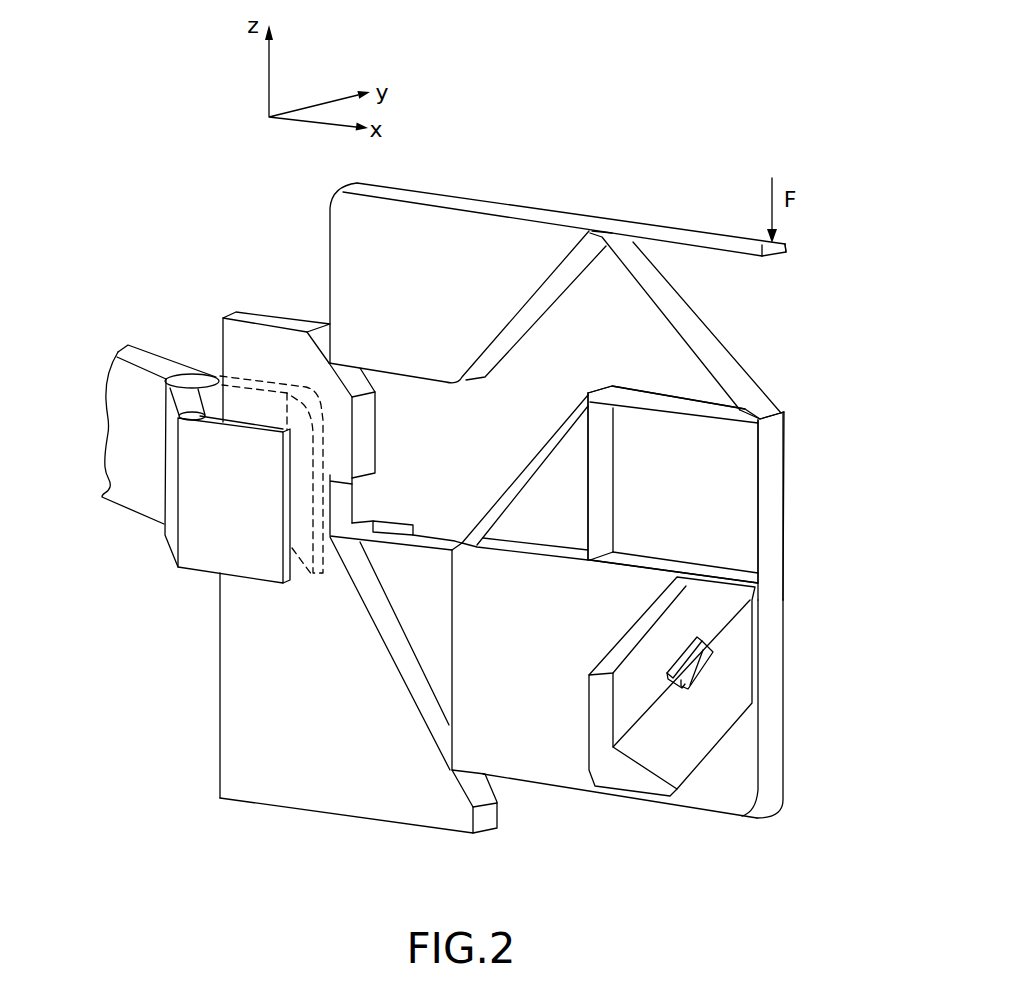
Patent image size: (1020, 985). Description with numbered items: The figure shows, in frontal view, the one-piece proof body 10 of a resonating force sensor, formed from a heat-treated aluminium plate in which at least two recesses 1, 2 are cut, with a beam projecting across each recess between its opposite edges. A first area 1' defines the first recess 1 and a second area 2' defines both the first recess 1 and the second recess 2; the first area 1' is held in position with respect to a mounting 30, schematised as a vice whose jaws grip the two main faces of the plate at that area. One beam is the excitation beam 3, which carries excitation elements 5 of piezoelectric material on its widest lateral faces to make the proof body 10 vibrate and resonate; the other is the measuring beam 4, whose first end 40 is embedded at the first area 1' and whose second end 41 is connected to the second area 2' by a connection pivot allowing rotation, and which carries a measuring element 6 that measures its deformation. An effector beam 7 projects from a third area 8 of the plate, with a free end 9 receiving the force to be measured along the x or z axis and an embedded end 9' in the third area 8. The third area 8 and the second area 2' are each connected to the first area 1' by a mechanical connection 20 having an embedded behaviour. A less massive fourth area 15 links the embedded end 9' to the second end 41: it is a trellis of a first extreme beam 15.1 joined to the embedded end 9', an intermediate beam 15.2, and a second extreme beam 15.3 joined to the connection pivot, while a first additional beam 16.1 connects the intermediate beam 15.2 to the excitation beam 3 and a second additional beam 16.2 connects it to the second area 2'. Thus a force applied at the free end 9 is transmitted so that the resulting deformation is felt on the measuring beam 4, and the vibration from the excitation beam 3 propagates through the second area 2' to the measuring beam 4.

The first recess 1 is at (258, 609).
The first area 1' is at (336, 825).
The second recess 2 is at (728, 740).
The second area 2' is at (620, 829).
The excitation beam 3 is at (745, 615).
The measuring beam 4 is at (373, 536).
The excitation element 5 is at (678, 662).
The measuring element 6 is at (382, 524).
The effector beam 7 is at (640, 222).
The third area 8 is at (340, 230).
The free end 9 is at (810, 261).
The embedded end 9' is at (607, 189).
The proof body 10 is at (532, 188).
The fourth area 15 is at (880, 356).
The first extreme beam 15.1 is at (747, 400).
The intermediate beam 15.2 is at (660, 403).
The second extreme beam 15.3 is at (497, 507).
The first additional beam 16.1 is at (773, 433).
The second additional beam 16.2 is at (602, 462).
The mechanical connection 20 is at (325, 364).
The mounting 30 is at (127, 379).
The first end 40 is at (320, 535).
The second end 41 is at (450, 552).